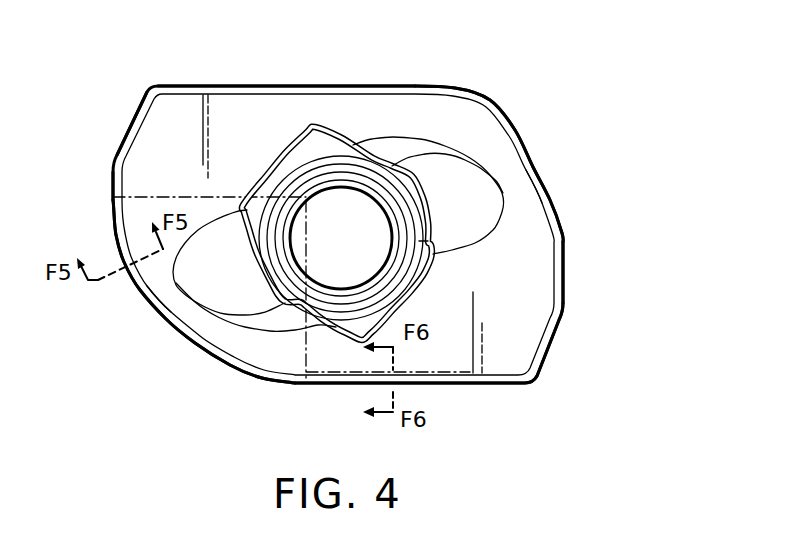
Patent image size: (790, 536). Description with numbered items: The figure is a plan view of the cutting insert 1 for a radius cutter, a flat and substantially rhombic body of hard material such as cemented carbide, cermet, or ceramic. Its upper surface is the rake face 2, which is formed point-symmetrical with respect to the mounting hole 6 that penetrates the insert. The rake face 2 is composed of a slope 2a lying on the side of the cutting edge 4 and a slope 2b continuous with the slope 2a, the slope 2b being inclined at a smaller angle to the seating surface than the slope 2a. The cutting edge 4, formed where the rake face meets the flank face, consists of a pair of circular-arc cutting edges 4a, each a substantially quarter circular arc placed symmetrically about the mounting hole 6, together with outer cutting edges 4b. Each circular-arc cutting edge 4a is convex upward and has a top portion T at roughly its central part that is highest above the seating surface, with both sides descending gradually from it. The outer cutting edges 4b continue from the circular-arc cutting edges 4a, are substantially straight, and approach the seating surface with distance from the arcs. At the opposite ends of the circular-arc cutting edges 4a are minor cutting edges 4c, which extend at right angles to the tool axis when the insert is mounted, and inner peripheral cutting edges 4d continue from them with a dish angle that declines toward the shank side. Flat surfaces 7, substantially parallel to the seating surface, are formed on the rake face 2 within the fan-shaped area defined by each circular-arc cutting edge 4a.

The cutting insert 1 is at (527, 86).
The rake face 2 is at (433, 115).
The slope 2a is at (423, 97).
The slope 2b is at (393, 108).
The cutting edge 4 is at (574, 228).
The circular-arc cutting edge 4a is at (523, 157).
The outer cutting edge 4b is at (275, 86).
The minor cutting edge 4c is at (113, 186).
The inner peripheral cutting edge 4d is at (133, 122).
The mounting hole 6 is at (348, 198).
The flat surface 7 is at (483, 207).
The top portion T is at (530, 163).